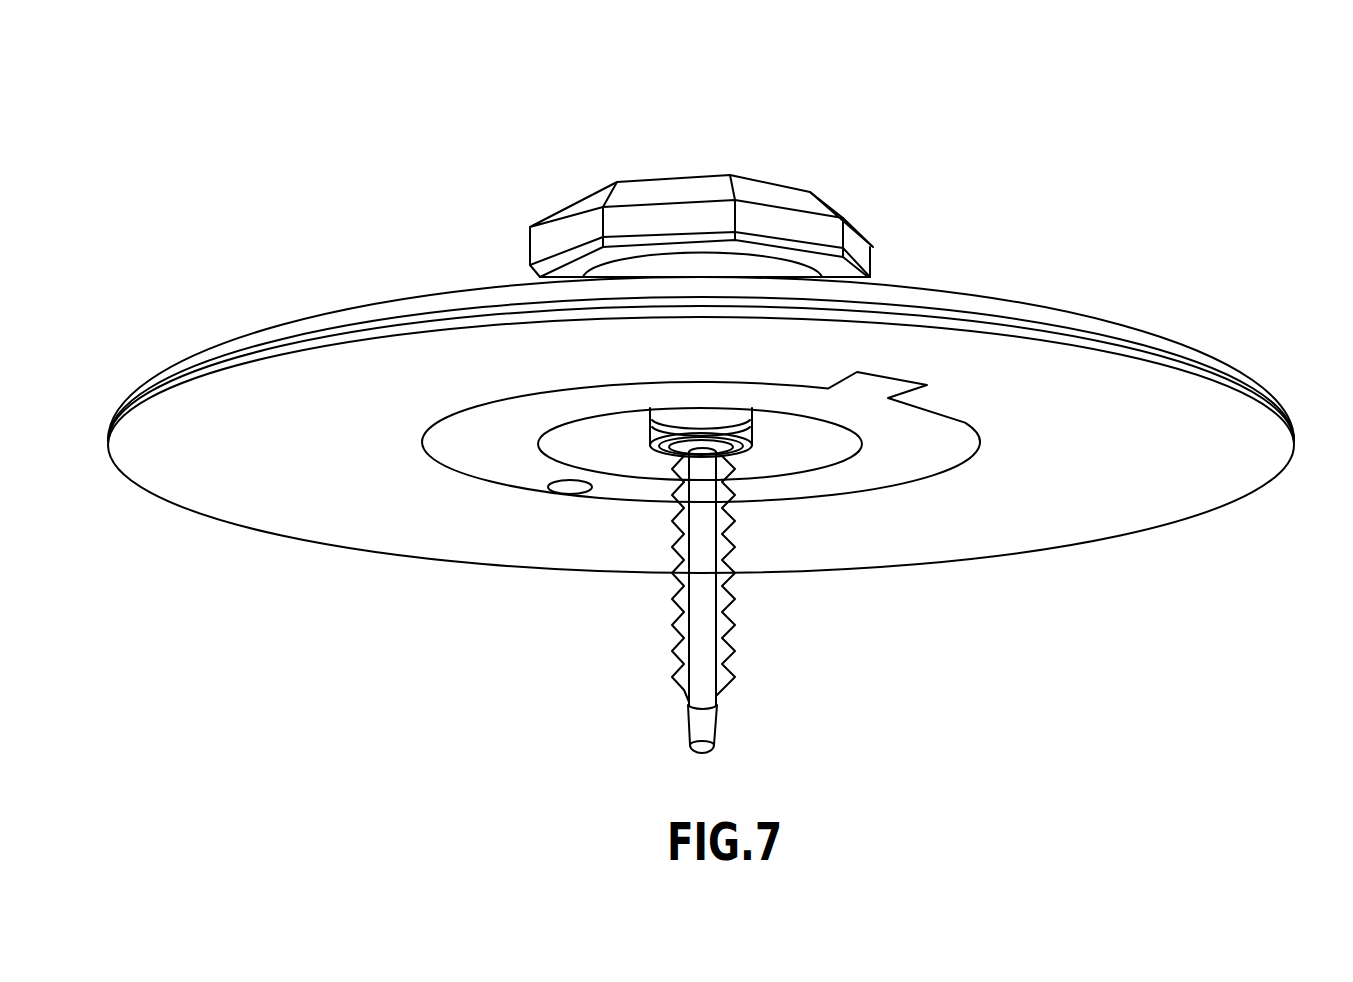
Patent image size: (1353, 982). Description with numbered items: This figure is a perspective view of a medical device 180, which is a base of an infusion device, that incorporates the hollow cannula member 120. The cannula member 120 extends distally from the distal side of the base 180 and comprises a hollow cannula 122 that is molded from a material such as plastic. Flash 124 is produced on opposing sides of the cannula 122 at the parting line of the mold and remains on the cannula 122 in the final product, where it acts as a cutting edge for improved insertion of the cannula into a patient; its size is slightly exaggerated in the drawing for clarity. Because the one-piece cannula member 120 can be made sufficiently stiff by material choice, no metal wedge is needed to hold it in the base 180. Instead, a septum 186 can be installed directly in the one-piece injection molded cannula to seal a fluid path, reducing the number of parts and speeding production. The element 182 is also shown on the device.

The base 180 is at (963, 185).
The nut 182 is at (705, 168).
The septum 186 is at (668, 157).
The cannula member 120 is at (701, 600).
The hollow cannula 122 is at (717, 732).
The flash 124 is at (738, 613).